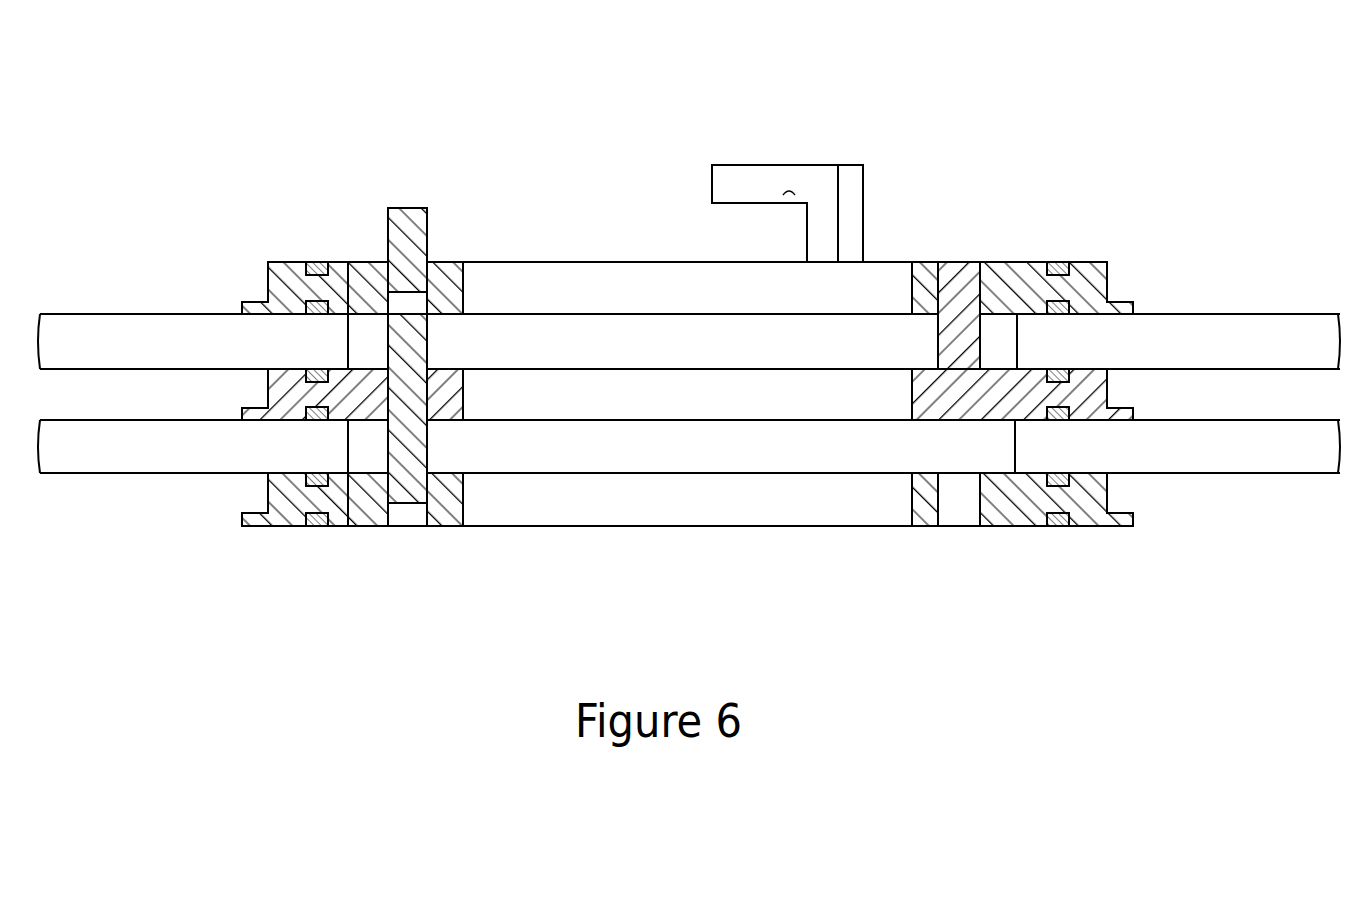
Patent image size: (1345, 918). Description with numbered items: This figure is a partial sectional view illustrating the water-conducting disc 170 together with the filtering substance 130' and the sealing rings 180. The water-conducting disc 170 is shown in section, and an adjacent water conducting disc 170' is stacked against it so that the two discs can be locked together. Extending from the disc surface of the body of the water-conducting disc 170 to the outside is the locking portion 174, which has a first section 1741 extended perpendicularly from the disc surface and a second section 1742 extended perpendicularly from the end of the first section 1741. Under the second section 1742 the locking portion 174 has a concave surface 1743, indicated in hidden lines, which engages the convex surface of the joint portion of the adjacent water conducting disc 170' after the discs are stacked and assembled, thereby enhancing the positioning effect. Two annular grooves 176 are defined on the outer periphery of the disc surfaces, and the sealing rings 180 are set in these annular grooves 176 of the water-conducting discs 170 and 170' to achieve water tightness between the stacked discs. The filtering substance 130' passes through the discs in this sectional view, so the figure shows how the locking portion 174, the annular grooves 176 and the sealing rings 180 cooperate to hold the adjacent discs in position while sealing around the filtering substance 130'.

The filtering substance 130' is at (689, 320).
The water-conducting disc 170 is at (1022, 436).
The adjacent water conducting disc 170' is at (1148, 234).
The locking portion 174 is at (789, 147).
The first section 1741 is at (823, 232).
The second section 1742 is at (730, 192).
The concave surface 1743 is at (790, 188).
The annular grooves 176 is at (350, 288).
The sealing rings 180 is at (303, 308).